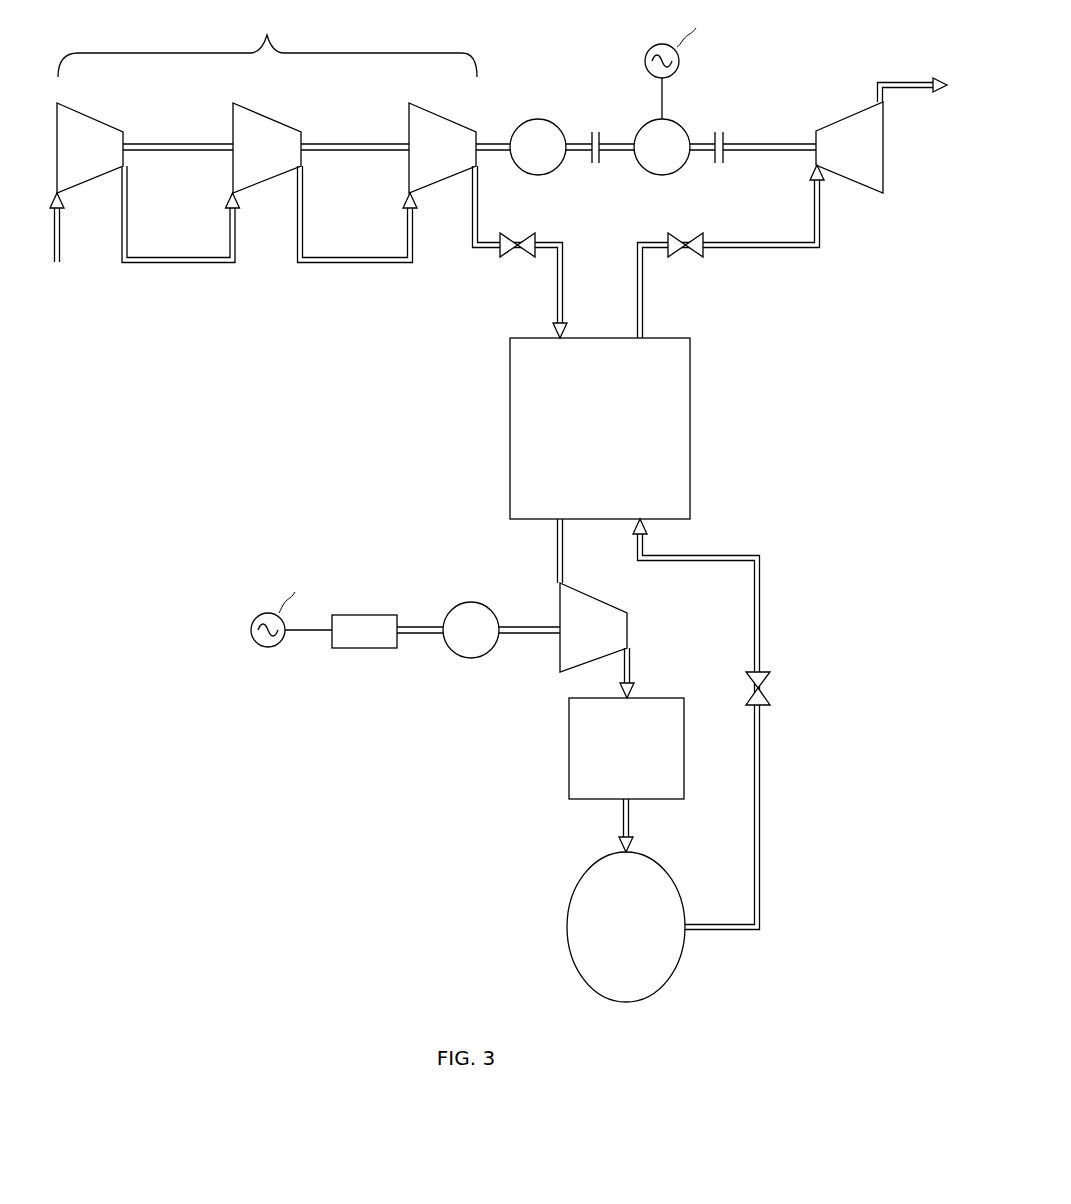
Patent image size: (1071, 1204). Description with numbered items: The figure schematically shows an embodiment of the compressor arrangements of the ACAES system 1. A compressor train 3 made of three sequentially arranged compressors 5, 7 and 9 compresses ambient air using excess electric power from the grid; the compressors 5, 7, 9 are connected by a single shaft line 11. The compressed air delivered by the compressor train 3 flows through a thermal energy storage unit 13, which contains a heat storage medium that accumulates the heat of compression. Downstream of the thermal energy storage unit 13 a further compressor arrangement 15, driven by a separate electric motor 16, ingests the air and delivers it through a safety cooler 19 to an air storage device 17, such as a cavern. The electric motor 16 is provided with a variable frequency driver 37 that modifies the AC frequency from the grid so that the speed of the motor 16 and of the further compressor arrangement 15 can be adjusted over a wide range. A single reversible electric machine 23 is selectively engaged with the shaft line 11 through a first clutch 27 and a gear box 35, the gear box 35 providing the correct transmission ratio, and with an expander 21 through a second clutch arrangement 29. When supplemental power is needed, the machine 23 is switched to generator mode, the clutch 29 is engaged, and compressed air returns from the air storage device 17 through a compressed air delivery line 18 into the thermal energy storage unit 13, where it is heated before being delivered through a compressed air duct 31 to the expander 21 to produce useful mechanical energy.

The ACAES system 1 is at (488, 503).
The compressor train 3 is at (267, 101).
The compressor 5 is at (90, 113).
The compressor 7 is at (282, 120).
The compressor 9 is at (409, 125).
The shaft line 11 is at (178, 145).
The thermal energy storage unit 13 is at (510, 425).
The further compressor arrangement 15 is at (622, 602).
The electric motor 16 is at (471, 658).
The air storage device 17 is at (567, 925).
The compressed air delivery line 18 is at (734, 723).
The safety cooler 19 is at (569, 748).
The expander 21 is at (835, 118).
The reversible electric machine 23 is at (662, 176).
The first clutch 27 is at (582, 130).
The second clutch arrangement 29 is at (727, 130).
The compressed air duct 31 is at (776, 249).
The gear box 35 is at (538, 176).
The variable frequency driver 37 is at (365, 650).